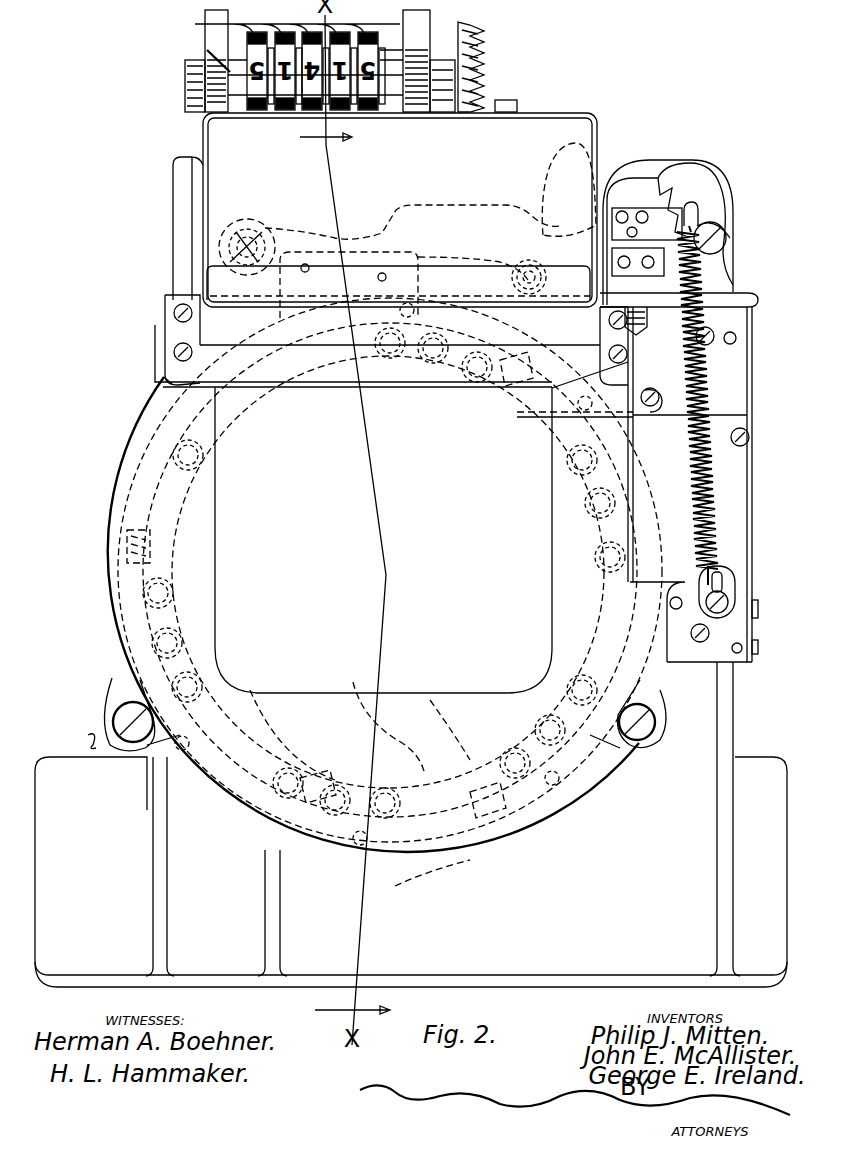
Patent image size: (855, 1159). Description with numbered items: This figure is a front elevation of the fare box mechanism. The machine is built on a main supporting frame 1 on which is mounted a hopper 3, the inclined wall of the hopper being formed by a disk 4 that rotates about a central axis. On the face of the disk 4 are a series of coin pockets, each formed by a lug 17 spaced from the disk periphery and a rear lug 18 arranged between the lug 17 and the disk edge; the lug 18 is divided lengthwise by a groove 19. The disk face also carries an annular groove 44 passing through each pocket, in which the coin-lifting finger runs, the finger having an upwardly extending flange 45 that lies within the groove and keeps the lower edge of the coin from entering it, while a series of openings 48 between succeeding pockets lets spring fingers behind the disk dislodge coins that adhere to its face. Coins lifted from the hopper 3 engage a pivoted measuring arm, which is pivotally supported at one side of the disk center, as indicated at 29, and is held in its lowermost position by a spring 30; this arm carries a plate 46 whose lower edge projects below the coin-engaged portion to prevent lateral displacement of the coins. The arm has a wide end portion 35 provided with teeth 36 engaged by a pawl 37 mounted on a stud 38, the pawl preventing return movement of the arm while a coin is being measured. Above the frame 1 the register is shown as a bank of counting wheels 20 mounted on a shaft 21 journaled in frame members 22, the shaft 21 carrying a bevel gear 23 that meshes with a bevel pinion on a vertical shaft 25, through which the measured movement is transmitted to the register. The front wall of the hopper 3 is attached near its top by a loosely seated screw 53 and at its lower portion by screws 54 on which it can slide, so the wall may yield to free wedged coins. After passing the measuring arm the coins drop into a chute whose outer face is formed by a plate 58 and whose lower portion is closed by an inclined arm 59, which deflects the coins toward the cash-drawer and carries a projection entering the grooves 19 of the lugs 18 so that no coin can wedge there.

The main supporting frame 1 is at (155, 843).
The hopper 3 is at (215, 312).
The disk 4 is at (142, 496).
The lug 17 is at (353, 690).
The lug 18 is at (305, 333).
The groove 19 is at (175, 381).
The counting wheels 20 is at (277, 29).
The shaft 21 is at (230, 72).
The frame members 22 is at (213, 92).
The bevel gear 23 is at (478, 62).
The vertical shaft 25 is at (512, 107).
The pivot of measuring arm 29 is at (245, 241).
The spring 30 is at (707, 382).
The wide end portion of measuring arm 35 is at (648, 185).
The teeth 36 is at (668, 200).
The pawl 37 is at (690, 197).
The stud 38 is at (715, 242).
The annular groove 44 is at (170, 483).
The flange 45 is at (345, 365).
The plate 46 is at (232, 297).
The openings 48 is at (602, 715).
The screw 53 is at (652, 406).
The screws 54 is at (127, 712).
The plate 58 is at (732, 477).
The arm or plate 59 is at (737, 663).